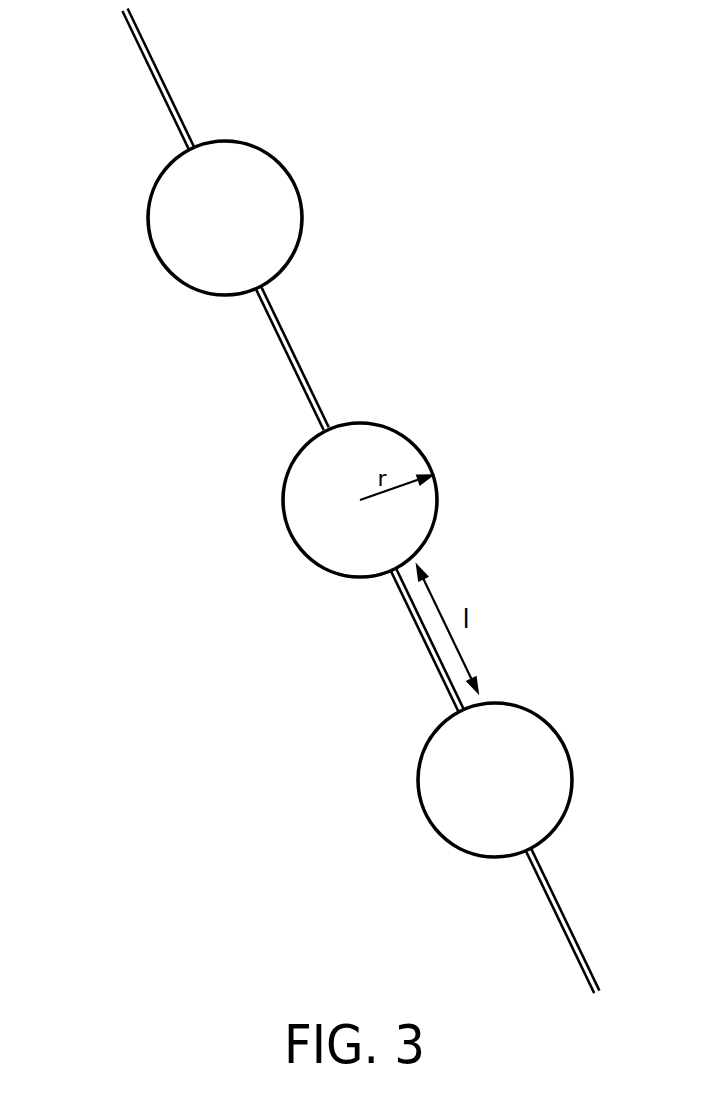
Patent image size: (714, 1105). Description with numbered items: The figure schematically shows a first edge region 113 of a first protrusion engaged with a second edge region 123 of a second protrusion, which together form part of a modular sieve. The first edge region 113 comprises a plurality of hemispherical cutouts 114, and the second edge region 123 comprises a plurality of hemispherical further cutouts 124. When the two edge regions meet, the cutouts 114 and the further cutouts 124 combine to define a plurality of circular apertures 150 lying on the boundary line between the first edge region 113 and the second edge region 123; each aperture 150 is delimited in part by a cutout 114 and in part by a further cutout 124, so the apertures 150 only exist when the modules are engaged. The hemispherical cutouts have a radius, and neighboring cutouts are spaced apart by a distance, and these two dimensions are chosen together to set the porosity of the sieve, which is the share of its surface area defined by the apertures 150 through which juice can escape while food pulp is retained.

The first edge region 113 is at (147, 56).
The cutouts 114 is at (225, 221).
The second edge region 123 is at (148, 82).
The further cutouts 124 is at (225, 225).
The apertures 150 is at (273, 255).